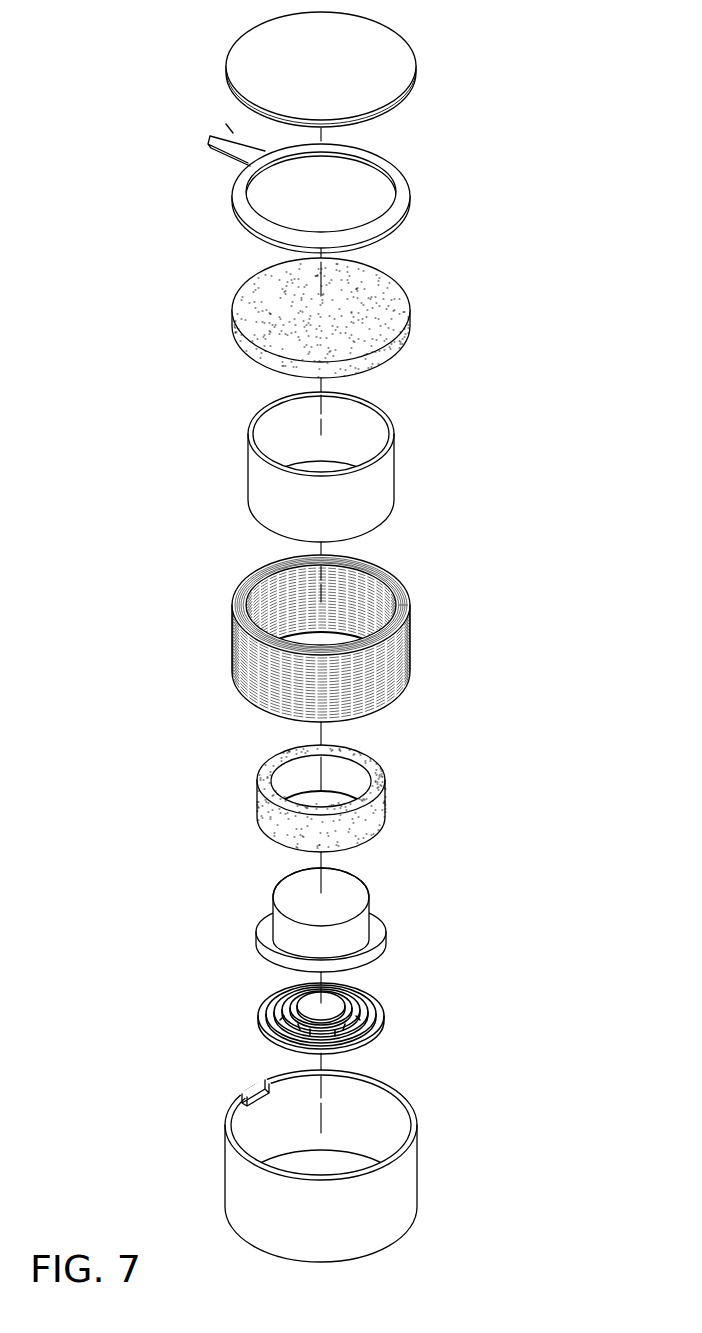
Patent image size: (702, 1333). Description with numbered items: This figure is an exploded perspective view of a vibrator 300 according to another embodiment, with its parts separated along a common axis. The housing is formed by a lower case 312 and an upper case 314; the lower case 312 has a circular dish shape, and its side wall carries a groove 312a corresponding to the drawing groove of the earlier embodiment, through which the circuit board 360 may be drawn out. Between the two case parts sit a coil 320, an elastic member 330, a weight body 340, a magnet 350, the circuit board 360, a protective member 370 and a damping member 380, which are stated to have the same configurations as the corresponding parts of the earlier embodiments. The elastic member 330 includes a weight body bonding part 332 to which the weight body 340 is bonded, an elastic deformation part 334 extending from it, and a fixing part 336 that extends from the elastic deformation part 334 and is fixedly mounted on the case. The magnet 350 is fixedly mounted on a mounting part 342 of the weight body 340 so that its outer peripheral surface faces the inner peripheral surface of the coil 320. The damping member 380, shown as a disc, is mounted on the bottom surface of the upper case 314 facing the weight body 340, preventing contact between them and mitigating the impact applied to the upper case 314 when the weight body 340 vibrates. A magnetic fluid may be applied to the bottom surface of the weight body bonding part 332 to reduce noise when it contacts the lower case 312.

The vibrator 300 is at (128, 33).
The lower case 312 is at (371, 1140).
The notch 312a is at (253, 1092).
The upper case 314 is at (400, 62).
The coil 320 is at (403, 645).
The elastic member 330 is at (408, 1006).
The weight body bonding part 332 is at (375, 1003).
The spring arm 334 is at (380, 1011).
The outer spring portion 336 is at (385, 1026).
The weight body 340 is at (358, 890).
The plate 342 is at (374, 928).
The magnet 350 is at (387, 803).
The circuit board 360 is at (400, 190).
The protective member 370 is at (386, 479).
The damping member 380 is at (400, 305).